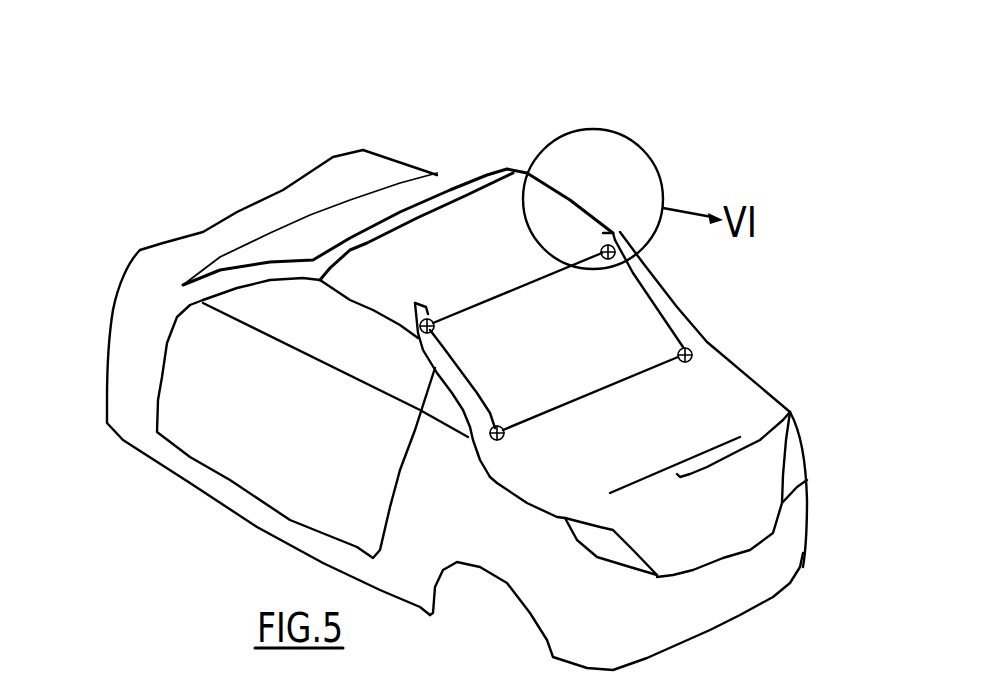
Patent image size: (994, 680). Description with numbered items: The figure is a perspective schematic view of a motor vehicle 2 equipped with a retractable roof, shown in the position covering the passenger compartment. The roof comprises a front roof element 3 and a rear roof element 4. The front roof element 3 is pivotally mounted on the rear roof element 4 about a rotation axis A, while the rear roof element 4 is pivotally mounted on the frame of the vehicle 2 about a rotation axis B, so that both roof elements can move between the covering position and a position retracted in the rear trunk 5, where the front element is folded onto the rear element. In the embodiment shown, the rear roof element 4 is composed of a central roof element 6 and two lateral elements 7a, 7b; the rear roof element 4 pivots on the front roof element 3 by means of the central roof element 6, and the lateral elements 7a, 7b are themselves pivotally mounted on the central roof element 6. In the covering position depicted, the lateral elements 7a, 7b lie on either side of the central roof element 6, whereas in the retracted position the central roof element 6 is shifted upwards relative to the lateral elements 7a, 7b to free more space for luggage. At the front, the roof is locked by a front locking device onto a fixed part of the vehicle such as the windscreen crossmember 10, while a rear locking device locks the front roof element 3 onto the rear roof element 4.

The motor vehicle 2 is at (283, 147).
The front roof element 3 is at (533, 230).
The rear roof element 4 is at (600, 303).
The rear trunk 5 is at (792, 412).
The central roof element 6 is at (633, 347).
The lateral roof element 7a is at (467, 378).
The lateral roof element 7b is at (690, 327).
The windscreen crossmember 10 is at (435, 203).
The rotation axis A is at (419, 332).
The rotation axis B is at (492, 440).